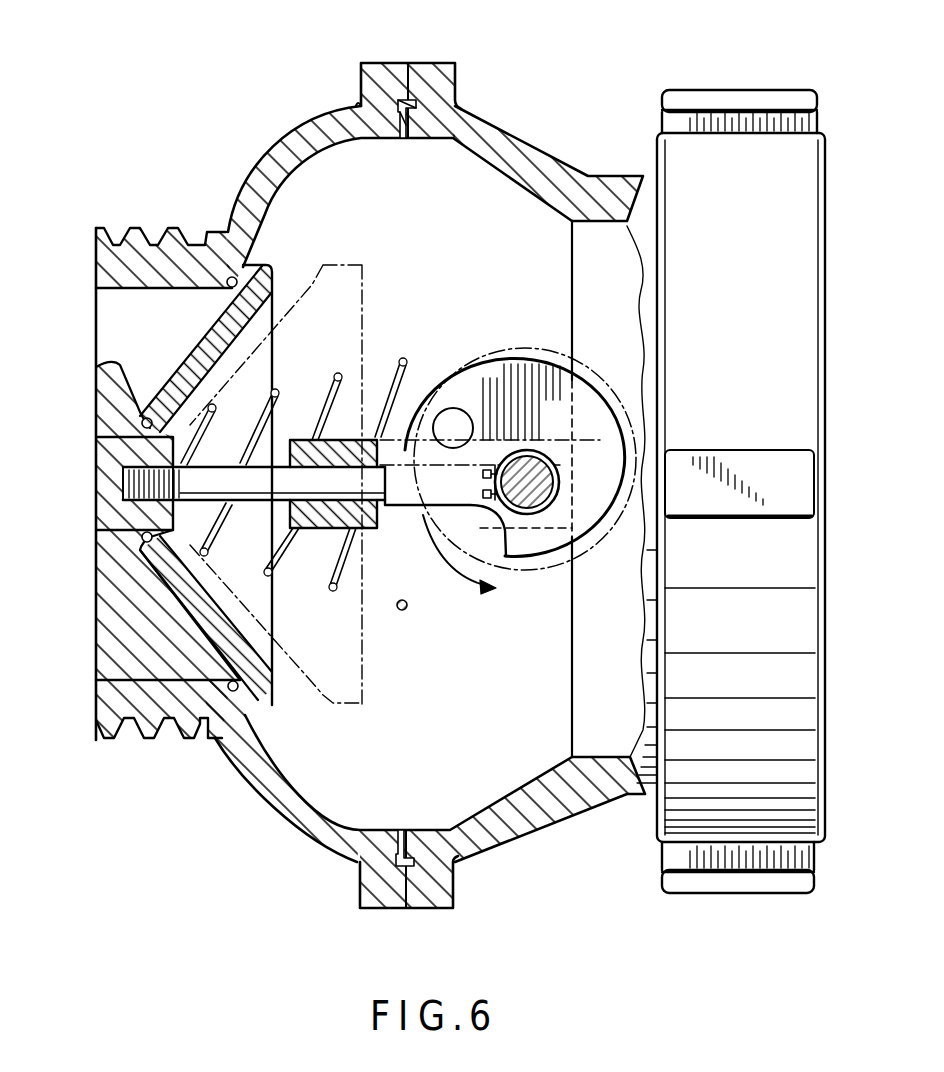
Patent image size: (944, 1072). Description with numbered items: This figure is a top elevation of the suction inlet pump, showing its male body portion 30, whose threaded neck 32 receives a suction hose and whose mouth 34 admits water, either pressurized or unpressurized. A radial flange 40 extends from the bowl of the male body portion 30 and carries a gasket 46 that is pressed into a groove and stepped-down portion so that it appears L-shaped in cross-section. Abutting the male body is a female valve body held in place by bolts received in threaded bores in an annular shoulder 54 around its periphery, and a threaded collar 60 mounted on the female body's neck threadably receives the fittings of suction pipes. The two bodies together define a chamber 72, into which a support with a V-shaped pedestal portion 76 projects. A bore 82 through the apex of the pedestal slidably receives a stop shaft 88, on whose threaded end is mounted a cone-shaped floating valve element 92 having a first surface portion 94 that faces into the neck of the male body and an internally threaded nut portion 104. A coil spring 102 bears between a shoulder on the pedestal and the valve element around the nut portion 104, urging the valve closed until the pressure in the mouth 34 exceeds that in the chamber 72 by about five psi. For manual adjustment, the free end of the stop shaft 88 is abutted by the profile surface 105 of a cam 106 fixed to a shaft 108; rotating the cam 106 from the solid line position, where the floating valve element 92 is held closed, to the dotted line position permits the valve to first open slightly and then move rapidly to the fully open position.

The male body portion 30 is at (274, 149).
The threaded neck 32 is at (186, 226).
The mouth 34 is at (164, 327).
The radial flange 40 is at (368, 68).
The gasket 46 is at (403, 140).
The annular shoulder 54 is at (457, 72).
The threaded collar 60 is at (797, 156).
The chamber 72 is at (486, 259).
The V-shaped pedestal portion 76 is at (312, 518).
The bore 82 is at (306, 440).
The stop shaft 88 is at (264, 484).
The cone-shaped floating valve element 92 is at (168, 622).
The first surface portion 94 is at (122, 366).
The coil spring 102 is at (336, 590).
The internally threaded nut portion 104 is at (118, 443).
The profile surface 105 is at (470, 356).
The cam 106 is at (517, 350).
The shaft 108 is at (527, 510).